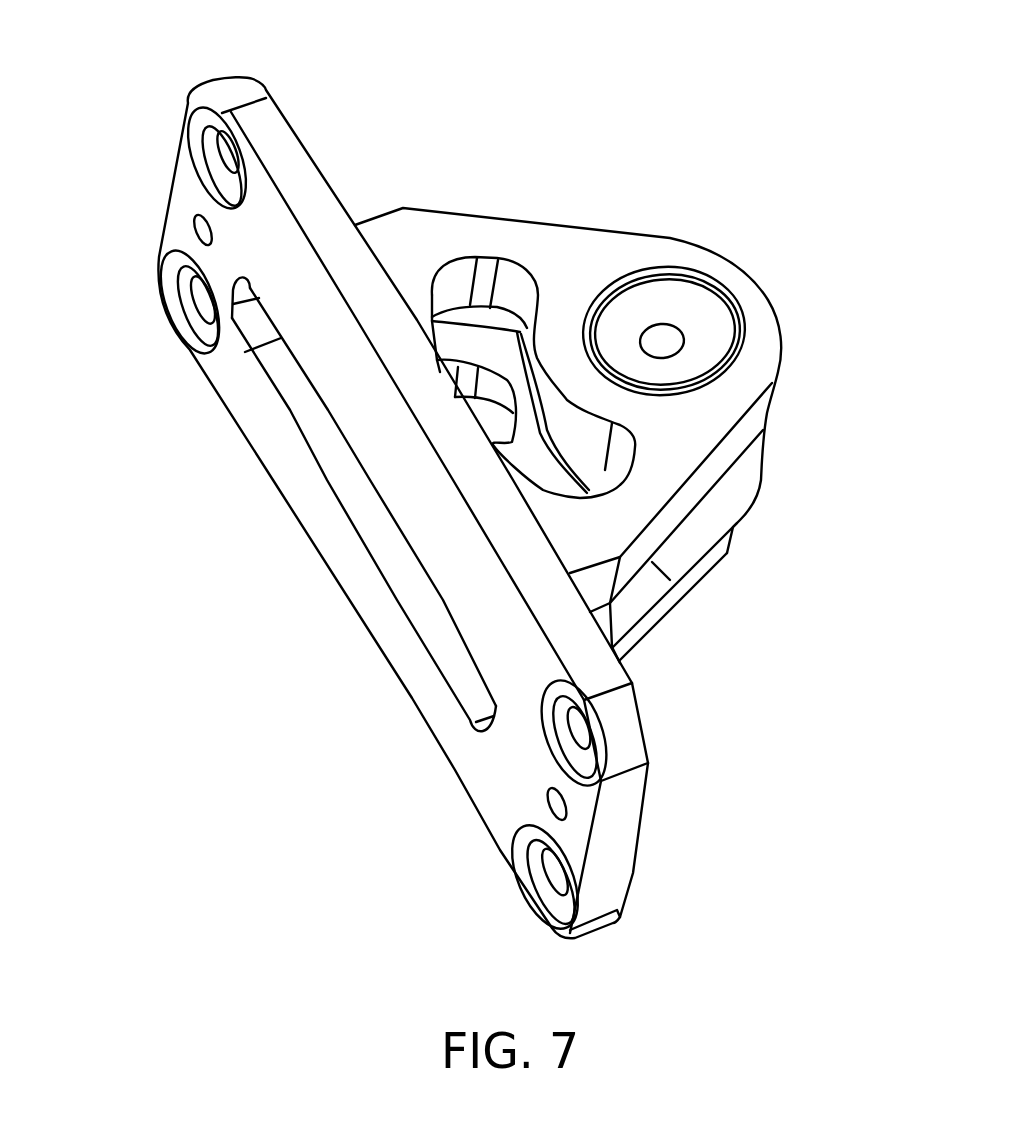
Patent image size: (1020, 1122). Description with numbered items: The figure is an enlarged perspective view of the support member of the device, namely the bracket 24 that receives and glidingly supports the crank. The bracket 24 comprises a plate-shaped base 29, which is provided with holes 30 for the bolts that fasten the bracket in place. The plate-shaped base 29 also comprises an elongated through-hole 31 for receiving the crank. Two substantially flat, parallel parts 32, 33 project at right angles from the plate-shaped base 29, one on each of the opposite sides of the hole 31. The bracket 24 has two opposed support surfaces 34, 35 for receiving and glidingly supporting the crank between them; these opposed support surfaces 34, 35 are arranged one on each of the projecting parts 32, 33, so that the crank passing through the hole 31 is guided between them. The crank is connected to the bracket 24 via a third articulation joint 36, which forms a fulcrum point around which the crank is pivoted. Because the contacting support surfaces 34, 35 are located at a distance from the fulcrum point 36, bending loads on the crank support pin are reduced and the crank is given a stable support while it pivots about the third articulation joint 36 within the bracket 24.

The bracket 24 is at (471, 474).
The plate-shaped base 29 is at (350, 484).
The holes 30 is at (203, 157).
The elongated through-hole 31 is at (415, 570).
The projecting part 32 is at (622, 374).
The projecting part 33 is at (737, 477).
The support surface 34 is at (283, 362).
The support surface 35 is at (352, 500).
The third articulation joint 36 is at (693, 307).